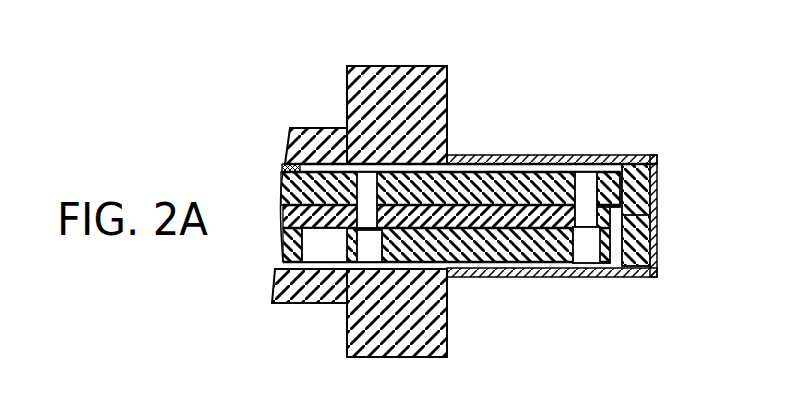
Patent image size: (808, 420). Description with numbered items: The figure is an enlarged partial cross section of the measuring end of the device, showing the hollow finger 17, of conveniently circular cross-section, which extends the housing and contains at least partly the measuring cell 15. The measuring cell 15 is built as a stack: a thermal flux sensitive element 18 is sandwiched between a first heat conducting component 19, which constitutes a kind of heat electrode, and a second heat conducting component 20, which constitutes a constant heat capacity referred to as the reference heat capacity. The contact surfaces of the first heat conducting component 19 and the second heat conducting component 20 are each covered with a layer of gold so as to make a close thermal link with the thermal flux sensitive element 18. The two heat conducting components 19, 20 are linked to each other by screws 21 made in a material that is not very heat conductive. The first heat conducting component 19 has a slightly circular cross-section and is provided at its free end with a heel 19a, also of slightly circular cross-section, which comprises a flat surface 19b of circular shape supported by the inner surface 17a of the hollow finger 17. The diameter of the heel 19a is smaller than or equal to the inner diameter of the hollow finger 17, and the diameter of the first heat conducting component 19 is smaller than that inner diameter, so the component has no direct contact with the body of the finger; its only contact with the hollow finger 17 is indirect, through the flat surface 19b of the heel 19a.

The measuring cell 15 is at (493, 184).
The hollow finger 17 is at (618, 155).
The inner surface 17a is at (658, 203).
The thermal flux sensitive element 18 is at (497, 229).
The first heat conducting component 19 is at (560, 186).
The heel 19a is at (653, 230).
The flat surface 19b is at (653, 245).
The second heat conducting component 20 is at (538, 240).
The screws 21 is at (585, 192).